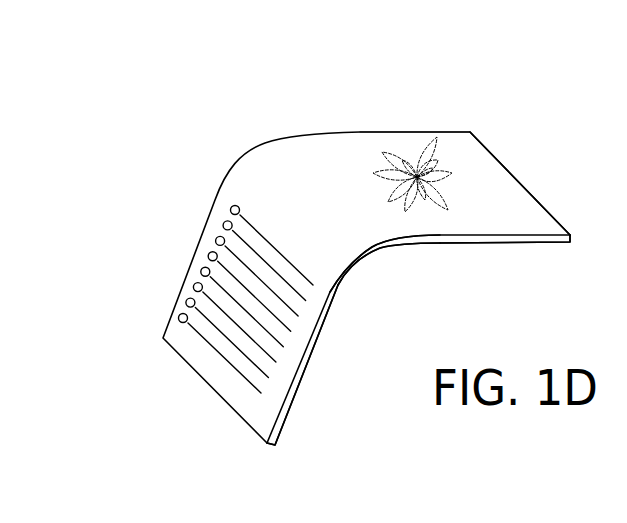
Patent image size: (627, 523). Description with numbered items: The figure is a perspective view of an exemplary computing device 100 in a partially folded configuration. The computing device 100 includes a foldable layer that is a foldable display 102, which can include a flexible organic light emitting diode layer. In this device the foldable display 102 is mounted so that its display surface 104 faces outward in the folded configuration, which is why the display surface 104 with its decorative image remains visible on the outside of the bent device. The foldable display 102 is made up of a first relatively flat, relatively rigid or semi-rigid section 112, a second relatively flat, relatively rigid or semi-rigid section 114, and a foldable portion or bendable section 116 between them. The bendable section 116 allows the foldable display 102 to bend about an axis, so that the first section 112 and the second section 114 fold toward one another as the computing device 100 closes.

The computing device 100 is at (212, 135).
The foldable display 102 is at (517, 179).
The display surface 104 is at (318, 152).
The first section 112 is at (493, 253).
The second section 114 is at (300, 408).
The bendable section 116 is at (372, 285).